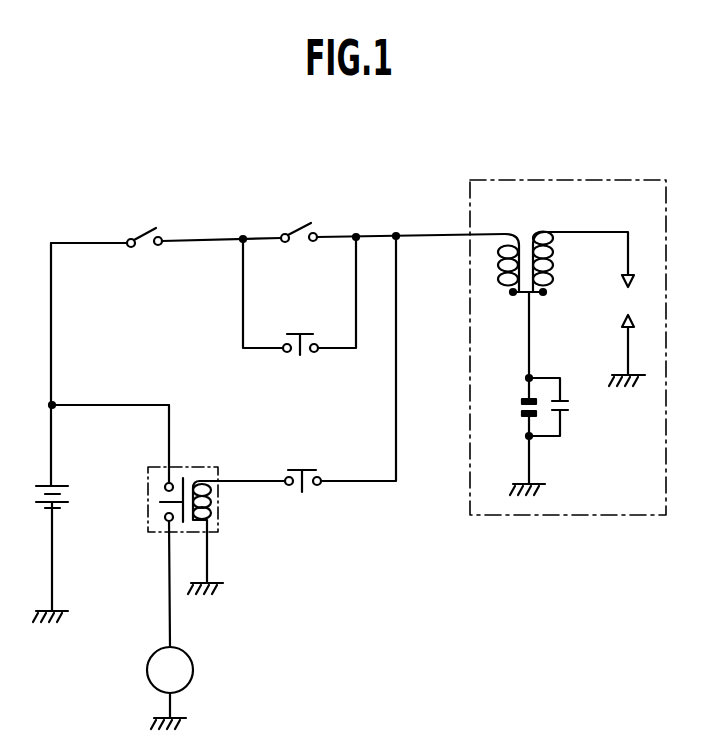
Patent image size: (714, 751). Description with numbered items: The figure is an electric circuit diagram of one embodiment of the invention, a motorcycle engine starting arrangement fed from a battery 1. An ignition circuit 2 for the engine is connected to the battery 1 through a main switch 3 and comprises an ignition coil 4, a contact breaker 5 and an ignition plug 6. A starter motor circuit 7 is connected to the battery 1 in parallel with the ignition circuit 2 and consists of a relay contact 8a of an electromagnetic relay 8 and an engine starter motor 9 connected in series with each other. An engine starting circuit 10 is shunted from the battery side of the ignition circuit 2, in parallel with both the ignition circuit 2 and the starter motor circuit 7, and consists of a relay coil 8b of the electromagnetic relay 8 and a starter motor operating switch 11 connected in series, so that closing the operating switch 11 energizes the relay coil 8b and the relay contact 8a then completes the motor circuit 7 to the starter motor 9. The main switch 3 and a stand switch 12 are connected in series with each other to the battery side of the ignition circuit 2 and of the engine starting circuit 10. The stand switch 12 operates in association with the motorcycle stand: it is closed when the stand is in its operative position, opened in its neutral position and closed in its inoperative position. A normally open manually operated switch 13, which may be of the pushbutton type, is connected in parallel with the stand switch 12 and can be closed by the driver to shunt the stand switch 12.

The battery 1 is at (37, 498).
The ignition circuit 2 is at (512, 178).
The main switch 3 is at (131, 237).
The ignition coil 4 is at (503, 262).
The contact breaker 5 is at (520, 413).
The ignition plug 6 is at (630, 305).
The starter motor circuit 7 is at (100, 382).
The electromagnetic relay 8 is at (208, 508).
The relay contact 8a is at (178, 521).
The relay coil 8b is at (212, 512).
The engine starter motor 9 is at (148, 670).
The engine starting circuit 10 is at (397, 410).
The starter motor operating switch 11 is at (302, 468).
The stand switch 12 is at (287, 233).
The manually operated switch 13 is at (300, 355).